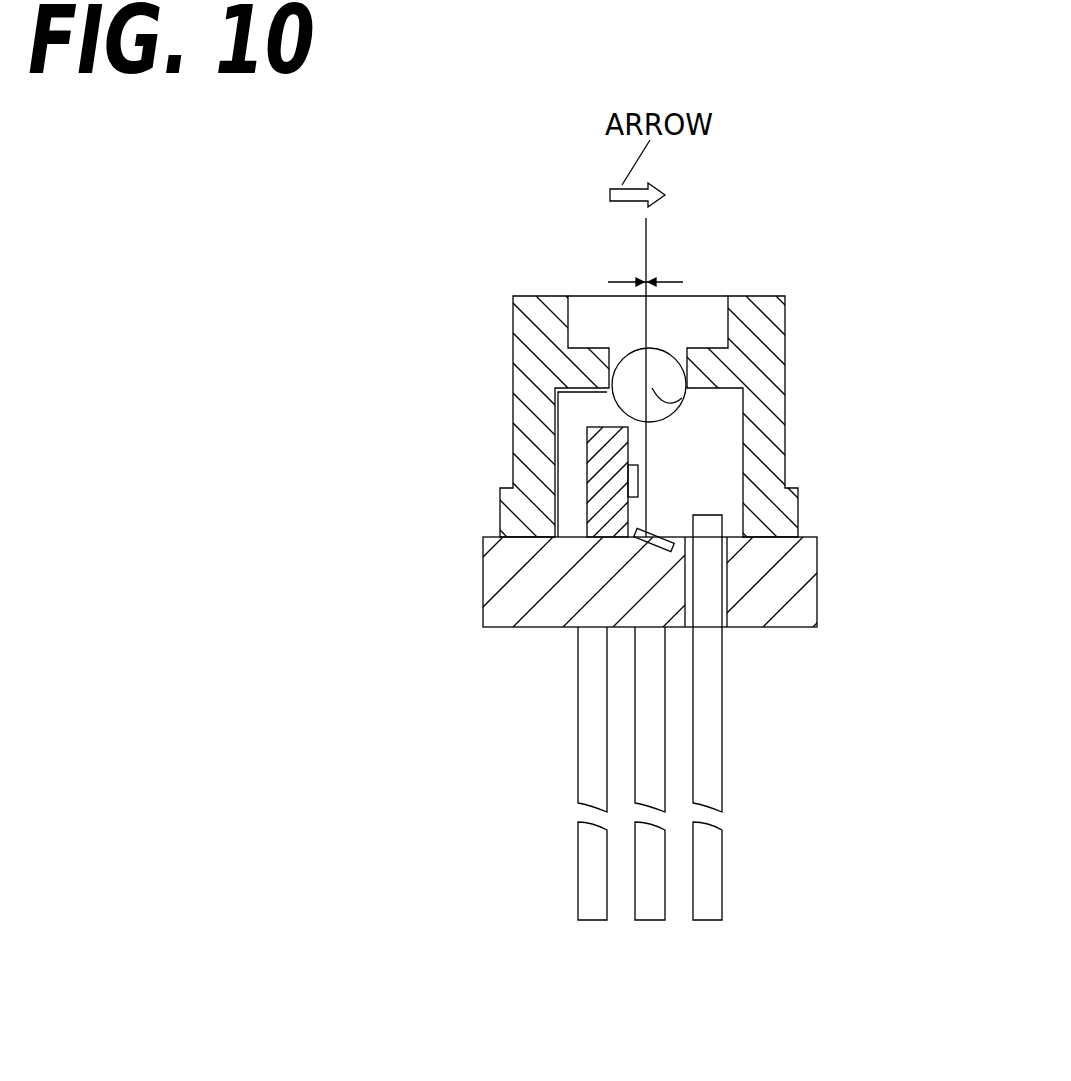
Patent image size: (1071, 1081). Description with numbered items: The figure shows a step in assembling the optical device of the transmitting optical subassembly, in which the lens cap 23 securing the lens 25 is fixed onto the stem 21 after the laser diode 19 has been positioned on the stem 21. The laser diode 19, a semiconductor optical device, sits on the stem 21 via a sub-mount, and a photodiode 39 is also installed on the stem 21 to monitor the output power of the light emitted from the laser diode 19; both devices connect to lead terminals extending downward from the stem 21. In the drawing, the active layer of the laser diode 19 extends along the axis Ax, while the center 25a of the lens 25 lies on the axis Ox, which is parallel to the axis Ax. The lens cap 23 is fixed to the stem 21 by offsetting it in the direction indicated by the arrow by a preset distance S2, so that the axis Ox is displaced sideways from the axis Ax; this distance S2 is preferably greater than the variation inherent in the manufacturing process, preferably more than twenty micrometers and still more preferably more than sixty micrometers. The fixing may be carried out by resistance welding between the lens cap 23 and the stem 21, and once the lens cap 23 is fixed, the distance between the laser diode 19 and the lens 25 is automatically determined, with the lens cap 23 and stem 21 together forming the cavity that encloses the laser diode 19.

The lens cap 23 is at (780, 330).
The lens 25 is at (665, 357).
The center of the lens 25a is at (674, 404).
The laser diode 19 is at (655, 478).
The stem 21 is at (800, 598).
The photodiode 39 is at (665, 552).
The axis Ax is at (642, 252).
The axis Ox is at (650, 275).
The preset distance S2 is at (627, 280).